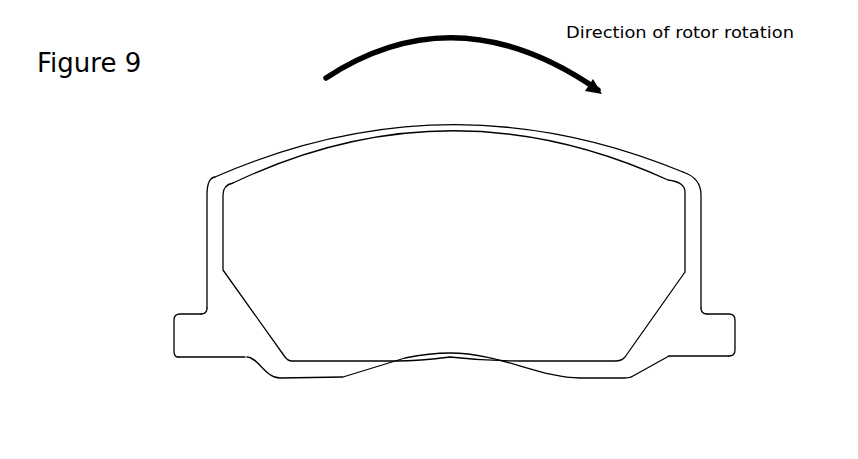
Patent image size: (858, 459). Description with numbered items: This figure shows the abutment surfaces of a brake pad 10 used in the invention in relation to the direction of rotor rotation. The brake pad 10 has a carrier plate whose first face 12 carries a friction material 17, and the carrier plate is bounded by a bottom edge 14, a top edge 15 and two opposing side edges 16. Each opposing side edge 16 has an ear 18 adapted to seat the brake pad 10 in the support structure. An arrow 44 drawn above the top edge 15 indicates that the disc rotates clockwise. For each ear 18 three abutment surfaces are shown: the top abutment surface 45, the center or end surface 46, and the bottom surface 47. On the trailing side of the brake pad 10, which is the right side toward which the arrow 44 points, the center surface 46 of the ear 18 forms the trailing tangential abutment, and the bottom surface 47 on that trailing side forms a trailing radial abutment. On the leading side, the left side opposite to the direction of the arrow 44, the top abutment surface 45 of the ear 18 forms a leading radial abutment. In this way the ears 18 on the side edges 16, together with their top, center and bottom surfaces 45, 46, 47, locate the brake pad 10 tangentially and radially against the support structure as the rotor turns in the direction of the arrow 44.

The brake pad 10 is at (455, 250).
The first face 12 is at (455, 250).
The bottom edge 14 is at (469, 359).
The top edge 15 is at (437, 128).
The side edge 16 is at (203, 230).
The friction material 17 is at (278, 118).
The ear 18 is at (455, 333).
The arrow 44 is at (356, 57).
The top abutment surface 45 is at (185, 311).
The center abutment surface 46 is at (166, 336).
The bottom abutment surface 47 is at (190, 360).